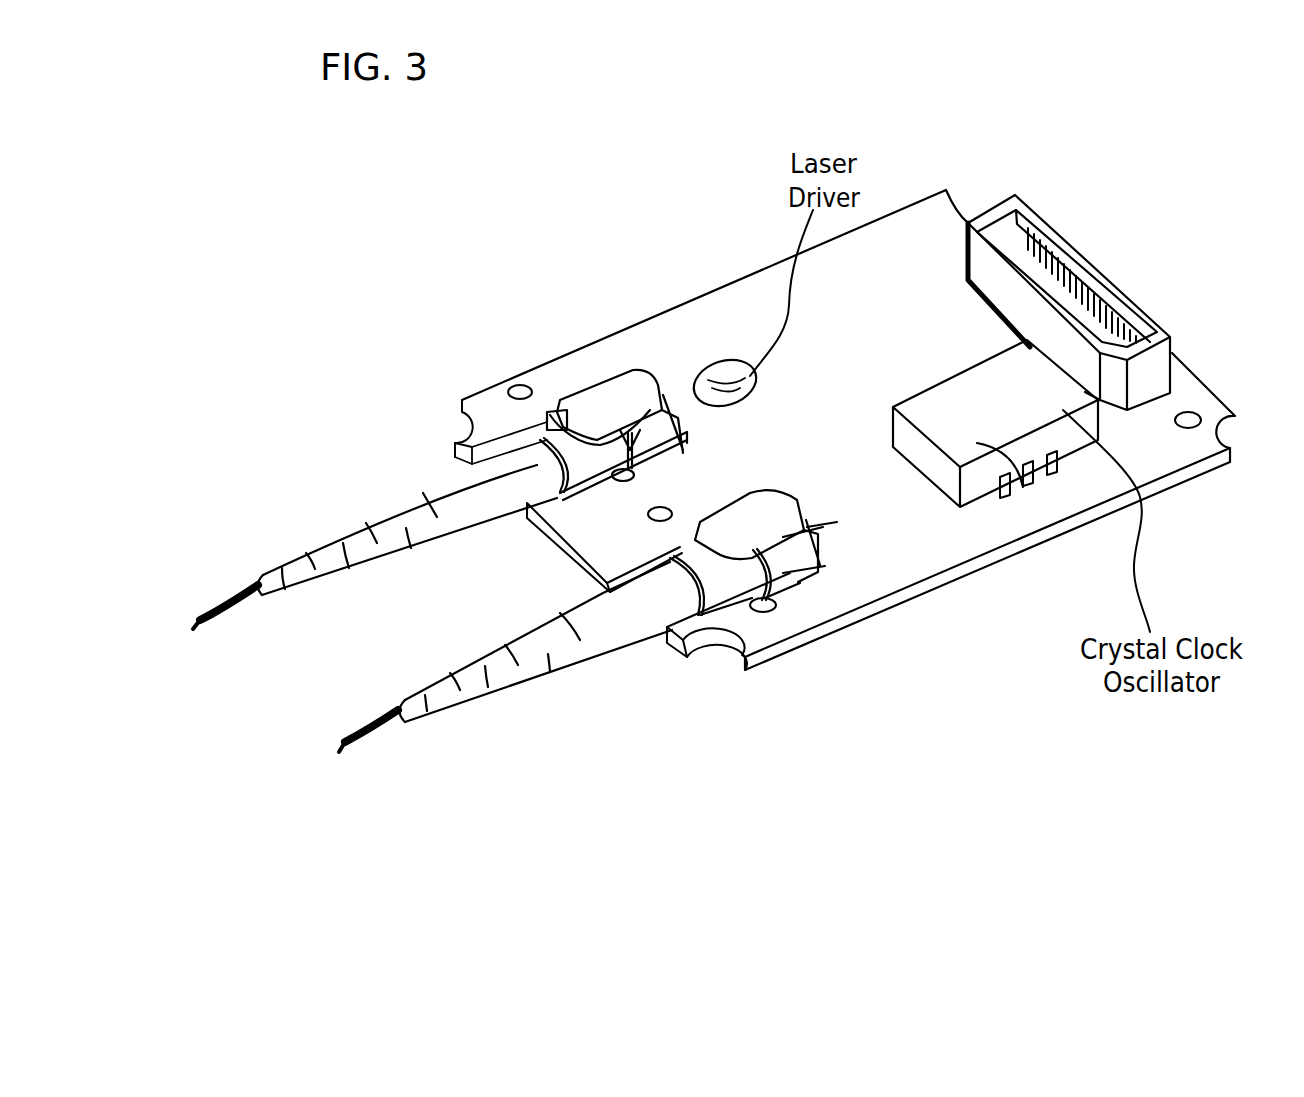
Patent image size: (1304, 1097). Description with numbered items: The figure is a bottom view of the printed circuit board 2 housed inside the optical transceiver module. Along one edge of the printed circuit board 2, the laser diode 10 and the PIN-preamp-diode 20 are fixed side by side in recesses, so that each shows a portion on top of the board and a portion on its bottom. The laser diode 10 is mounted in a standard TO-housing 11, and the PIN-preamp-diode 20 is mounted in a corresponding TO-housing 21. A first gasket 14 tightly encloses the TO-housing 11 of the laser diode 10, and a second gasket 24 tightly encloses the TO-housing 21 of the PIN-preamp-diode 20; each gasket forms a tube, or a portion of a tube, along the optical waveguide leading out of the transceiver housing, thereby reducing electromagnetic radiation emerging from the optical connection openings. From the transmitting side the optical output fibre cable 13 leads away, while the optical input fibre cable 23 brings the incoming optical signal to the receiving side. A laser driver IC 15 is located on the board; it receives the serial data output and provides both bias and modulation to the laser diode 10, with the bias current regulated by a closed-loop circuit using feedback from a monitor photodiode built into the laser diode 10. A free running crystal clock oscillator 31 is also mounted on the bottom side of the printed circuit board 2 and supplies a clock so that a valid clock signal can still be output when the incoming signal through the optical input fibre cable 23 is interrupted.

The printed circuit board 2 is at (1198, 468).
The laser diode 10 is at (440, 440).
The TO-housing 11 is at (640, 443).
The optical output fibre cable 13 is at (233, 607).
The first gasket 14 is at (620, 393).
The laser driver IC 15 is at (728, 372).
The PIN-preamp-diode 20 is at (639, 647).
The TO-housing 21 is at (775, 590).
The optical input fibre cable 23 is at (391, 728).
The second gasket 24 is at (827, 527).
The crystal clock oscillator 31 is at (1028, 483).